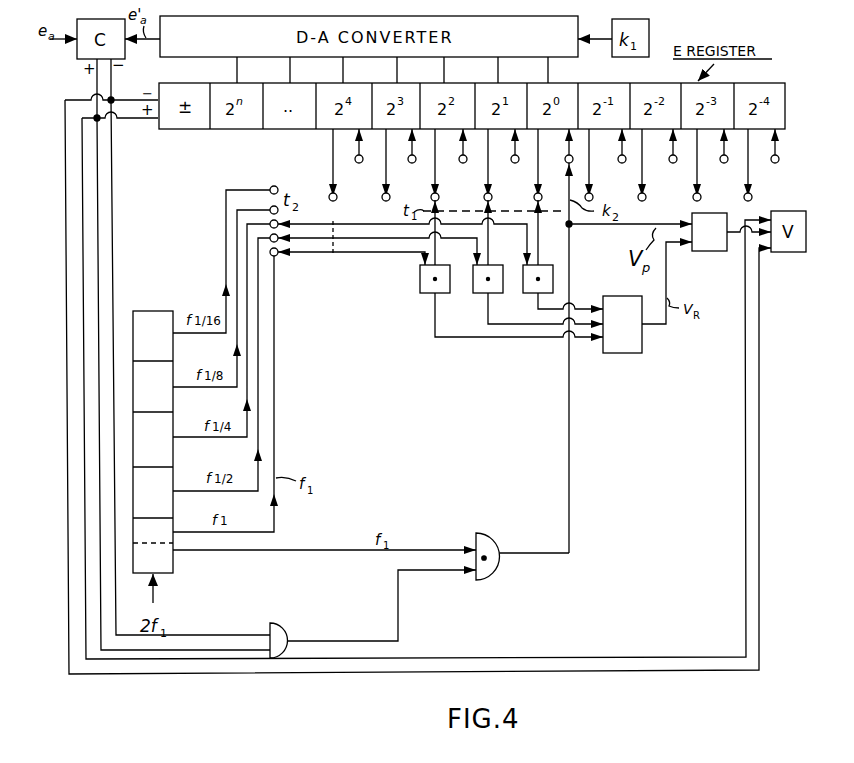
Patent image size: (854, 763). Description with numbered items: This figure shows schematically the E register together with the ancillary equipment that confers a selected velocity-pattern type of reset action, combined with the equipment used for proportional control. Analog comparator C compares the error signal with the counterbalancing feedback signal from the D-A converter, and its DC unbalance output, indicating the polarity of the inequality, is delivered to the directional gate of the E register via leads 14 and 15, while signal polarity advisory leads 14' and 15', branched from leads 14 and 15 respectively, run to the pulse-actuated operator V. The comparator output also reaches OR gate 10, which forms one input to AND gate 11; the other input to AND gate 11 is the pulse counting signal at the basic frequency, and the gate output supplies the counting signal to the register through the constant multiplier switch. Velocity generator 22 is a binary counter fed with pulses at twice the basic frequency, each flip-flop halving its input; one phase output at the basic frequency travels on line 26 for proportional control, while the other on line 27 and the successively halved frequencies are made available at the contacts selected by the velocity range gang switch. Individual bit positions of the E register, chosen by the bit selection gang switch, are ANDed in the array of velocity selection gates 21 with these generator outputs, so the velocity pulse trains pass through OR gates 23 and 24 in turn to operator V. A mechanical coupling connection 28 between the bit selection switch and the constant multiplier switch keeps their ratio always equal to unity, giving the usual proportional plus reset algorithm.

The OR gate 10 is at (286, 631).
The AND gate 11 is at (493, 571).
The lead 14 is at (111, 81).
The signal polarity advisory lead 14' is at (405, 375).
The lead 15 is at (120, 109).
The signal polarity advisory lead 15' is at (402, 388).
The velocity selection gates 21 is at (538, 296).
The velocity generator 22 is at (151, 308).
The OR gate 23 is at (627, 355).
The OR gate 24 is at (708, 253).
The line 26 is at (330, 551).
The line 27 is at (276, 430).
The mechanical coupling connection 28 is at (510, 209).